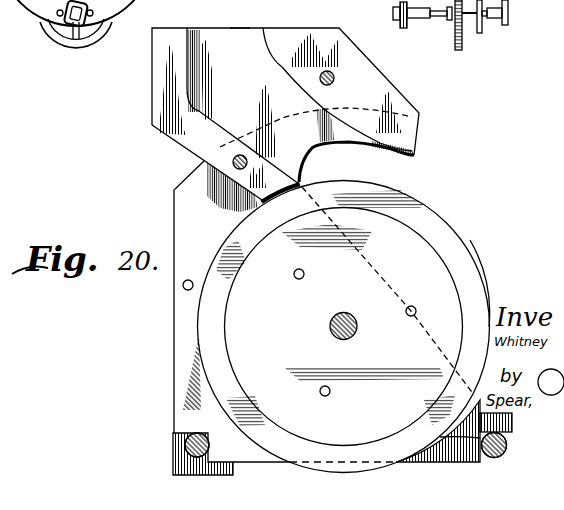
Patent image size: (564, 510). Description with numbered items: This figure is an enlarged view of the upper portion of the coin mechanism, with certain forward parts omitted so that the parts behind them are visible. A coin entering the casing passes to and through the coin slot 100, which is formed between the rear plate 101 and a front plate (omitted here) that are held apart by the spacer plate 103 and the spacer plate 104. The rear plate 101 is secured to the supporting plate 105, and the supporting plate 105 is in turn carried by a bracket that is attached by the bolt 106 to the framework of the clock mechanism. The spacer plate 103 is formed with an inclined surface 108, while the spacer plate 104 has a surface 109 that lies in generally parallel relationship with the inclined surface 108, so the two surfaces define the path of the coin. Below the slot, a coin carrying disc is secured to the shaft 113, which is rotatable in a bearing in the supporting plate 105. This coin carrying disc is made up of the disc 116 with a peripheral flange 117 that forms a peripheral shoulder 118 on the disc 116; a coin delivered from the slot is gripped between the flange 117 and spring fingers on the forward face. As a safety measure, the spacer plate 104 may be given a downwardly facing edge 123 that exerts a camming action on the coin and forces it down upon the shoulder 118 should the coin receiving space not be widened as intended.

The coin slot 100 is at (295, 107).
The rear plate 101 is at (240, 32).
The spacer plate 103 is at (165, 91).
The spacer plate 104 is at (382, 92).
The supporting plate 105 is at (187, 207).
The bolt 106 is at (183, 445).
The inclined surface 108 is at (227, 134).
The surface 109 is at (296, 85).
The shaft 113 is at (354, 332).
The disc 116 is at (420, 250).
The peripheral flange 117 is at (477, 253).
The peripheral shoulder 118 is at (483, 280).
The downwardly facing edge 123 is at (399, 157).